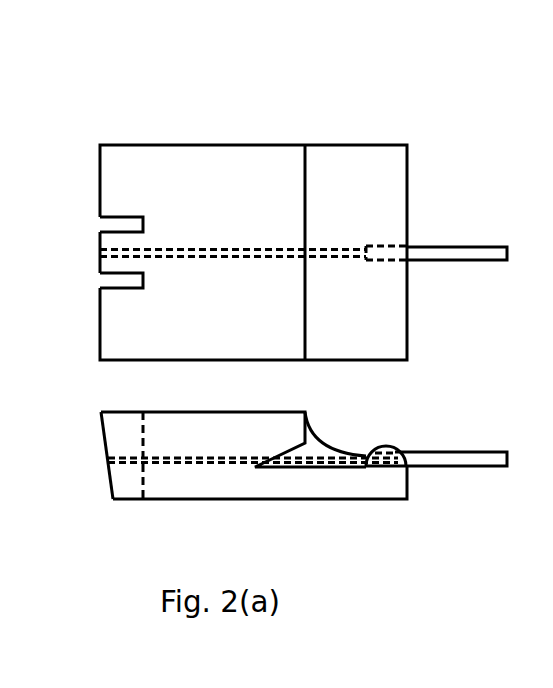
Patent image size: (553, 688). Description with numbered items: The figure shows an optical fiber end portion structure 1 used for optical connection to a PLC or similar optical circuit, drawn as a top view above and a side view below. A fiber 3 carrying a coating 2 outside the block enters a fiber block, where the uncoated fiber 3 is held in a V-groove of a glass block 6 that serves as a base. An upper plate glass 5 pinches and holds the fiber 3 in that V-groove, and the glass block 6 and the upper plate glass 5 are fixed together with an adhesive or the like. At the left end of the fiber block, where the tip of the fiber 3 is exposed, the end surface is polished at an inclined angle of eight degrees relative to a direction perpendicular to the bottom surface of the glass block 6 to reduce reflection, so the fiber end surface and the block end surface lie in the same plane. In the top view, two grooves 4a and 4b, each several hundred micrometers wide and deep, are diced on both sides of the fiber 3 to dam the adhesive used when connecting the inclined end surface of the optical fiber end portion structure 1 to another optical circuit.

The optical fiber end portion structure 1 is at (410, 109).
The coating 2 is at (477, 246).
The fiber 3 is at (220, 248).
The groove 4a is at (105, 224).
The groove 4b is at (105, 279).
The upper plate glass 5 is at (117, 435).
The glass block 6 is at (185, 493).